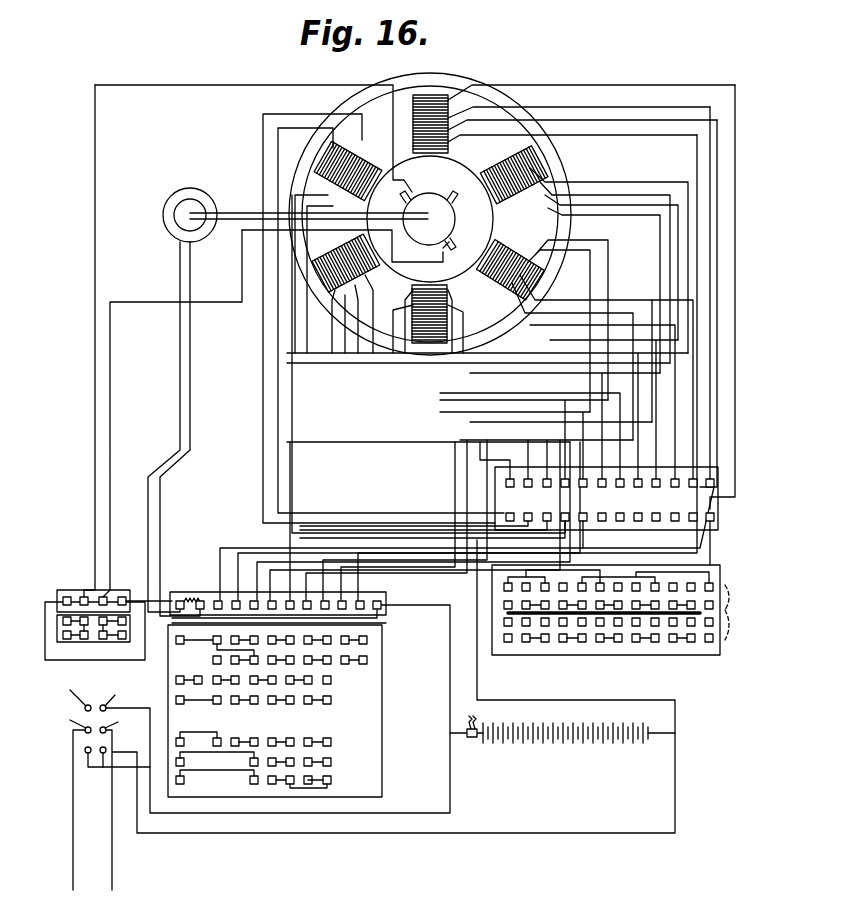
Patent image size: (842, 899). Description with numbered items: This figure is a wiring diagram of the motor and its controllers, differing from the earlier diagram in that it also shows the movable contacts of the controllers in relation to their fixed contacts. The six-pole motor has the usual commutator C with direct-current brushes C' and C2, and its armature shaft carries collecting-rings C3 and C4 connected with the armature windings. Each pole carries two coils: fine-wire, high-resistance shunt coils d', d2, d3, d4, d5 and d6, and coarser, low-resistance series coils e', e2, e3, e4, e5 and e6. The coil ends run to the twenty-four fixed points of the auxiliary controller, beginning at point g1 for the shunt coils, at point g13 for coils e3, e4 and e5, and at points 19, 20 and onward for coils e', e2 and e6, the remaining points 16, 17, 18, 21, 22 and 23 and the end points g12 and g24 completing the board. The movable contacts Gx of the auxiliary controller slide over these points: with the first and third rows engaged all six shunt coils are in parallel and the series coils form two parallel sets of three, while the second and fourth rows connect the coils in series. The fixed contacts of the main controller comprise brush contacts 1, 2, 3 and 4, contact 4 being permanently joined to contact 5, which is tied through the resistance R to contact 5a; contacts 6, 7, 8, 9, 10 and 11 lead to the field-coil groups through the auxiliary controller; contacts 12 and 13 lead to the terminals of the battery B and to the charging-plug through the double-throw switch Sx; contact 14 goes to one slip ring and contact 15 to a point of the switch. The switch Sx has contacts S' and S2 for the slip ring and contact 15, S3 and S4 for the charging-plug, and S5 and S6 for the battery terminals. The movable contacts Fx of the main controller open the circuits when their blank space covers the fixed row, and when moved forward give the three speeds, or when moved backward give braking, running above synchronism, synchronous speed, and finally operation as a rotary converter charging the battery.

The commutator C is at (430, 214).
The direct-current brush C' is at (264, 144).
The direct-current brush C2 is at (455, 246).
The collecting-ring C3 is at (165, 210).
The collecting-ring C4 is at (190, 200).
The field coil d' is at (414, 323).
The field coil d2 is at (346, 293).
The field coil d3 is at (413, 318).
The field coil d4 is at (506, 280).
The field coil d5 is at (506, 172).
The field coil d6 is at (413, 108).
The field coil e' is at (373, 150).
The field coil e2 is at (347, 241).
The field coil e3 is at (393, 291).
The field coil e4 is at (469, 287).
The field coil e5 is at (474, 157).
The field coil e6 is at (413, 142).
The auxiliary controller point g1 is at (504, 516).
The auxiliary controller point g12 is at (714, 517).
The auxiliary controller point g13 is at (504, 482).
The auxiliary controller point g24 is at (714, 483).
The resistance R is at (193, 592).
The movable contacts of the auxiliary controller Gx is at (323, 711).
The movable contacts of the main controller Fx is at (641, 609).
The battery B is at (555, 743).
The switch contact S' is at (71, 698).
The switch contact S2 is at (275, 709).
The switch contact S3 is at (64, 718).
The switch contact S4 is at (387, 715).
The switch contact S5 is at (85, 750).
The switch contact S6 is at (103, 757).
The double-throw switch Sx is at (65, 808).
The controller contact 1 is at (67, 597).
The controller contact 2 is at (81, 588).
The controller contact 3 is at (100, 588).
The controller contact 4 is at (122, 597).
The controller contact 5 is at (180, 601).
The controller contact 5a is at (200, 601).
The controller contact 6 is at (218, 601).
The controller contact 7 is at (236, 601).
The controller contact 8 is at (254, 601).
The controller contact 9 is at (272, 601).
The controller contact 10 is at (290, 601).
The controller contact 11 is at (307, 601).
The controller contact 12 is at (325, 601).
The controller contact 13 is at (342, 601).
The controller contact 14 is at (360, 601).
The controller contact 15 is at (381, 605).
The auxiliary controller point 16 is at (565, 477).
The auxiliary controller point 17 is at (583, 477).
The auxiliary controller point 18 is at (602, 477).
The auxiliary controller point 19 is at (620, 477).
The auxiliary controller point 20 is at (638, 477).
The auxiliary controller point 21 is at (656, 477).
The auxiliary controller point 22 is at (675, 477).
The auxiliary controller point 23 is at (693, 477).